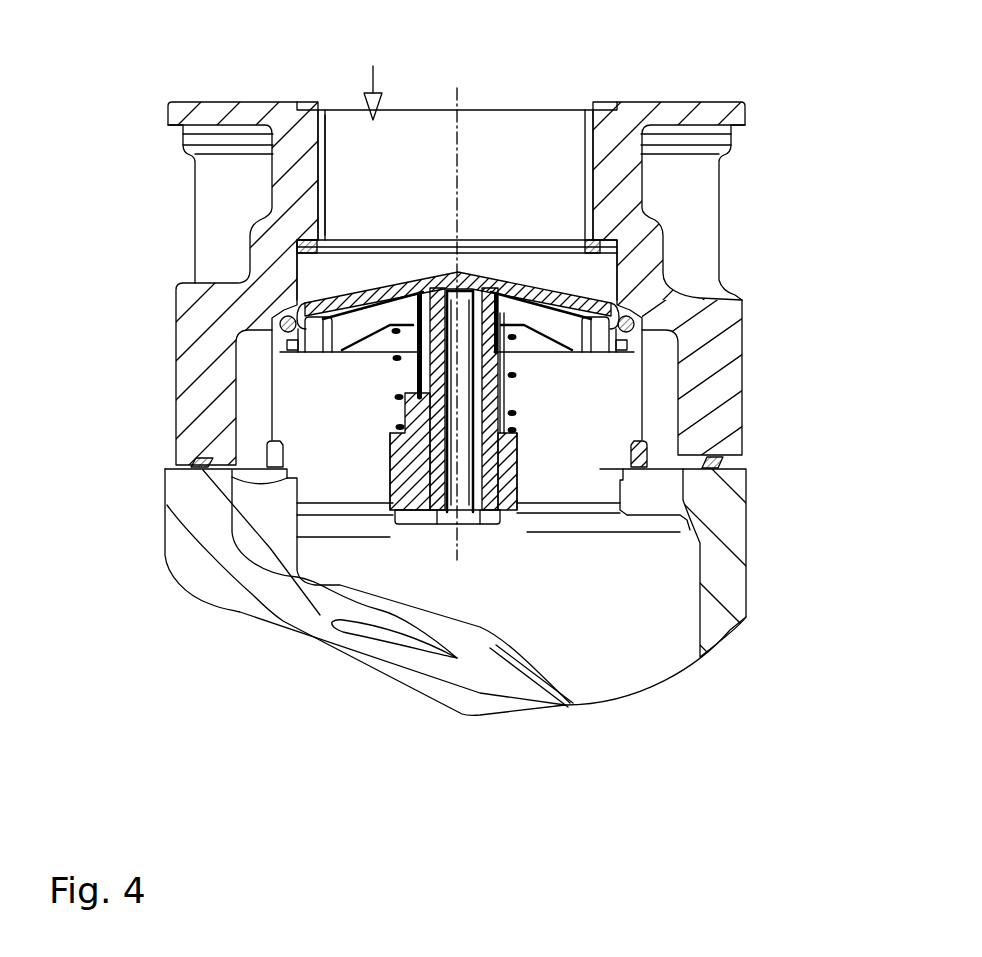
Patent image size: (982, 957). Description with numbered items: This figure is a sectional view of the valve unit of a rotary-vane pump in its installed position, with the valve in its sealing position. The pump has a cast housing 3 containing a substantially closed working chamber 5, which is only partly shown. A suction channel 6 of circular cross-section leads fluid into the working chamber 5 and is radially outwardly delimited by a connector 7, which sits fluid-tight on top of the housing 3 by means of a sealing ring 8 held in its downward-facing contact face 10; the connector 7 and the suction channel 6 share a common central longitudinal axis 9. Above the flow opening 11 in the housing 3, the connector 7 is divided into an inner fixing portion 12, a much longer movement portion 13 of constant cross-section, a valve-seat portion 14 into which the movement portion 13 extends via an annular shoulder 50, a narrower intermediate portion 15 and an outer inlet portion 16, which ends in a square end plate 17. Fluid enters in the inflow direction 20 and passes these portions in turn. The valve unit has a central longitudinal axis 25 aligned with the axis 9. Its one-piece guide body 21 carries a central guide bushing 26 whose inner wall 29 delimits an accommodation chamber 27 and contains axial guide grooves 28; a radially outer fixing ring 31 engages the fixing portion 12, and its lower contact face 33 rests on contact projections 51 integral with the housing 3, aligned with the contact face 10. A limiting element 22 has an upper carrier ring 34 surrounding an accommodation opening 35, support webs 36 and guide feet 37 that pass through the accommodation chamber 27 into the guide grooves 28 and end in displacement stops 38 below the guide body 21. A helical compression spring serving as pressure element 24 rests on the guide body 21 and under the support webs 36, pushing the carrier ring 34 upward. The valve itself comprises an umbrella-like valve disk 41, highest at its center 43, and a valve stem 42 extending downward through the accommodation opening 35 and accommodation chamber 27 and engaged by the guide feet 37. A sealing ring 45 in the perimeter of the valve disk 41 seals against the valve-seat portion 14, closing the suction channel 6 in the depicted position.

The housing 3 is at (752, 592).
The working chamber 5 is at (680, 620).
The suction channel 6 is at (550, 122).
The connector 7 is at (260, 97).
The sealing ring 8 is at (725, 460).
The central longitudinal axis 9 is at (457, 95).
The contact face 10 is at (690, 452).
The flow opening 11 is at (560, 505).
The fixing portion 12 is at (400, 445).
The movement portion 13 is at (270, 388).
The valve-seat portion 14 is at (300, 302).
The intermediate portion 15 is at (298, 274).
The inlet portion 16 is at (318, 188).
The end plate 17 is at (645, 100).
The inflow direction 20 is at (374, 78).
The guide body 21 is at (596, 430).
The limiting element 22 is at (412, 505).
The pressure element 24 is at (512, 358).
The central longitudinal axis 25 is at (487, 524).
The guide bushing 26 is at (398, 500).
The accommodation chamber 27 is at (540, 518).
The guide grooves 28 is at (620, 480).
The inner wall 29 is at (520, 400).
The fixing ring 31 is at (268, 455).
The contact face 33 is at (392, 505).
The carrier ring 34 is at (548, 322).
The accommodation opening 35 is at (500, 283).
The support webs 36 is at (525, 300).
The guide feet 37 is at (432, 512).
The displacement stop 38 is at (398, 510).
The valve disk 41 is at (378, 284).
The valve stem 42 is at (455, 524).
The center 43 is at (466, 272).
The sealing ring 45 is at (288, 315).
The annular shoulder 50 is at (283, 340).
The contact projections 51 is at (630, 491).